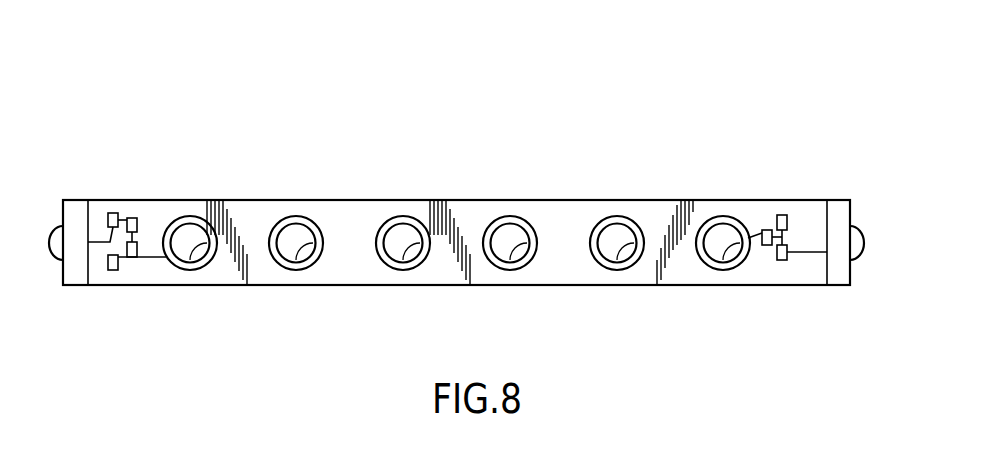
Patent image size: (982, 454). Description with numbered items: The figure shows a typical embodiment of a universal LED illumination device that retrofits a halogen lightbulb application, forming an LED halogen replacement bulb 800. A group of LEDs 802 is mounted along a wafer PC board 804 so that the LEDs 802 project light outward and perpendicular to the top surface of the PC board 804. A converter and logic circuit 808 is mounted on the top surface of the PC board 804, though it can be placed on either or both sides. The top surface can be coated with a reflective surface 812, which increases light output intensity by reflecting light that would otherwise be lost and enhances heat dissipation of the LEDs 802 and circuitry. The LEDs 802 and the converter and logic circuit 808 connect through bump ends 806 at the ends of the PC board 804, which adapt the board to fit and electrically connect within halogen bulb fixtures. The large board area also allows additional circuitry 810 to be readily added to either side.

The LED halogen replacement bulb 800 is at (518, 158).
The LEDs 802 is at (380, 258).
The PC board 804 is at (420, 200).
The bump ends 806 is at (858, 228).
The converter and logic circuit 808 is at (118, 263).
The additional circuitry 810 is at (798, 295).
The reflective surface 812 is at (577, 208).